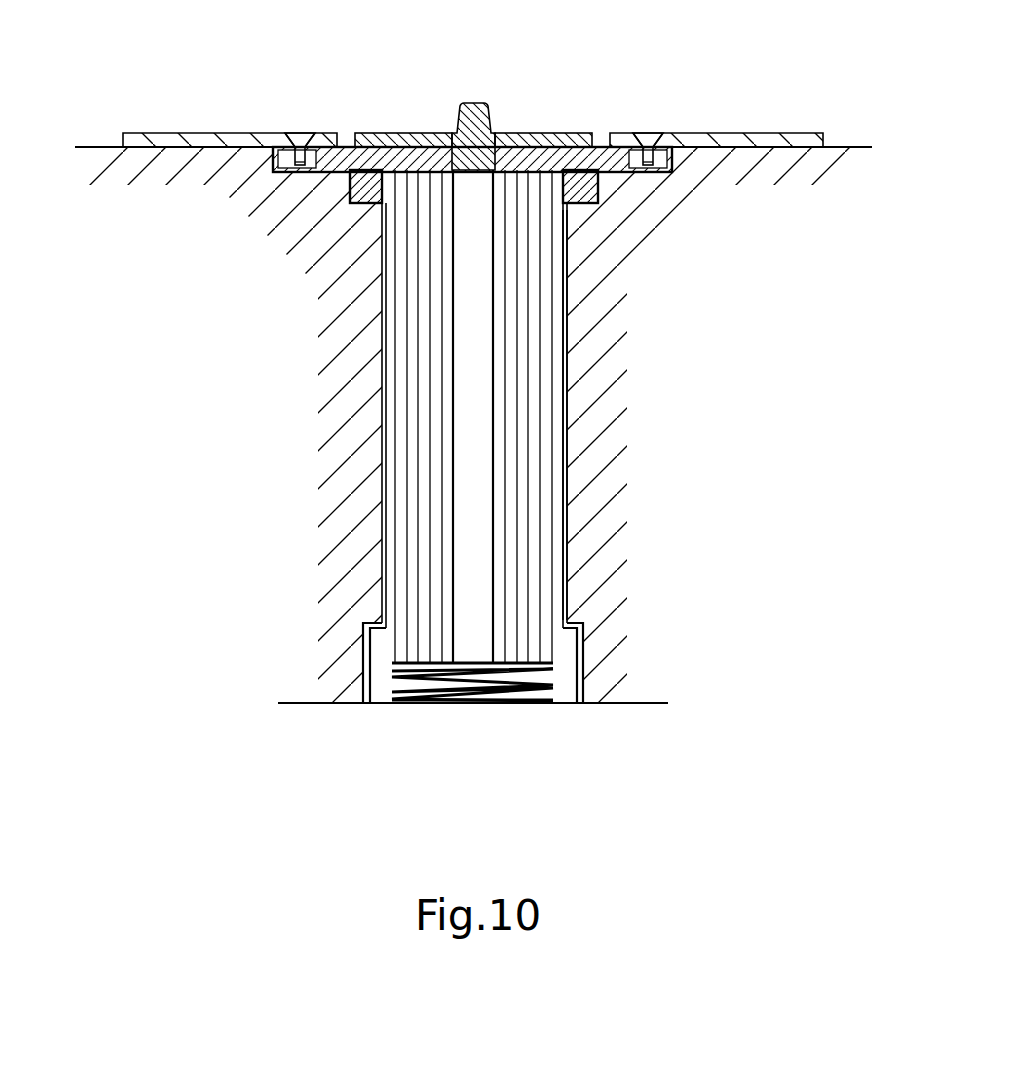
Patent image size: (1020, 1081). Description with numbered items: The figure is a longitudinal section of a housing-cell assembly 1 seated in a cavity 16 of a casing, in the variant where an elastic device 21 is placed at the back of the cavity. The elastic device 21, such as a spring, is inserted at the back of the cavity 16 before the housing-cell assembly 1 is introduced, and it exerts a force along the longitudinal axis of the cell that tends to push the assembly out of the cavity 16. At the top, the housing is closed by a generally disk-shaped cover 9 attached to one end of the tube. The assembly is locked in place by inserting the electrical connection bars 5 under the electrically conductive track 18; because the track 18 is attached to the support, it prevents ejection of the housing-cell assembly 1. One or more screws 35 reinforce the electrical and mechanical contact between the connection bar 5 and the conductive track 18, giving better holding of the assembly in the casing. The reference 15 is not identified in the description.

The housing-cell assembly 1 is at (569, 363).
The electrical connection bar 5 is at (540, 161).
The cover 9 is at (560, 131).
The base 15 is at (650, 706).
The cavity 16 is at (569, 437).
The electrically conductive track 18 is at (787, 131).
The elastic device 21 is at (495, 706).
The screw 35 is at (300, 131).